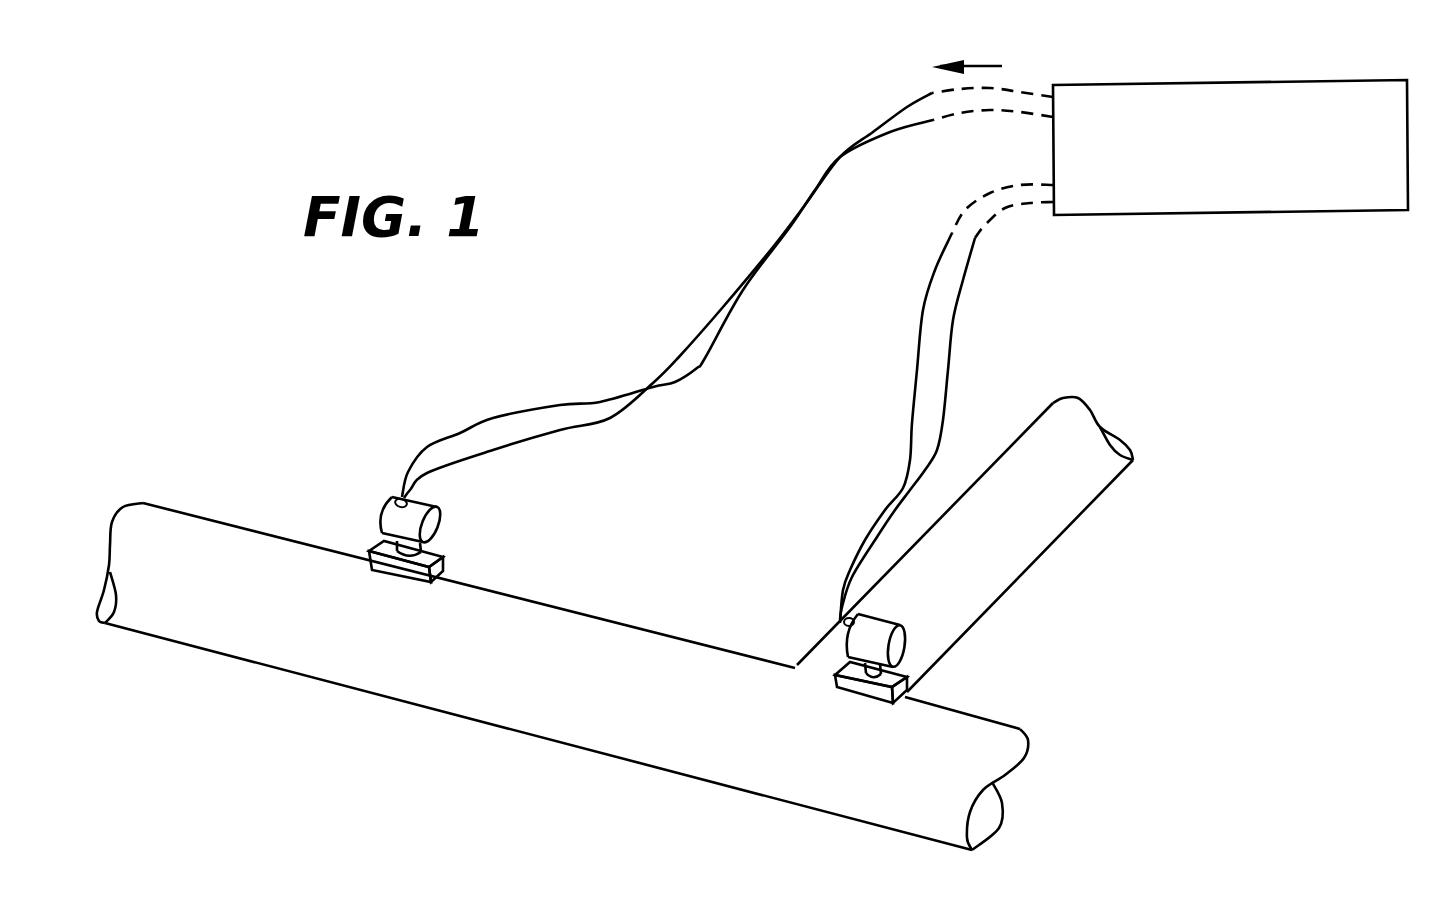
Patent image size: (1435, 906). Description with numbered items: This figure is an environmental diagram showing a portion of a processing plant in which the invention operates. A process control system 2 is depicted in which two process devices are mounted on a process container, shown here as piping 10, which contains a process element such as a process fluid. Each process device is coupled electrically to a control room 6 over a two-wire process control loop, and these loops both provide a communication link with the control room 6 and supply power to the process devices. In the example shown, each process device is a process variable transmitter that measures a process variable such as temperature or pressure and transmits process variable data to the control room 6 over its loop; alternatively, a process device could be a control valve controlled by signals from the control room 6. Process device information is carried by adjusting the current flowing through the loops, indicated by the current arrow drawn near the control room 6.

The process control system 2 is at (149, 330).
The control room 6 is at (1212, 82).
The piping 10 is at (183, 607).